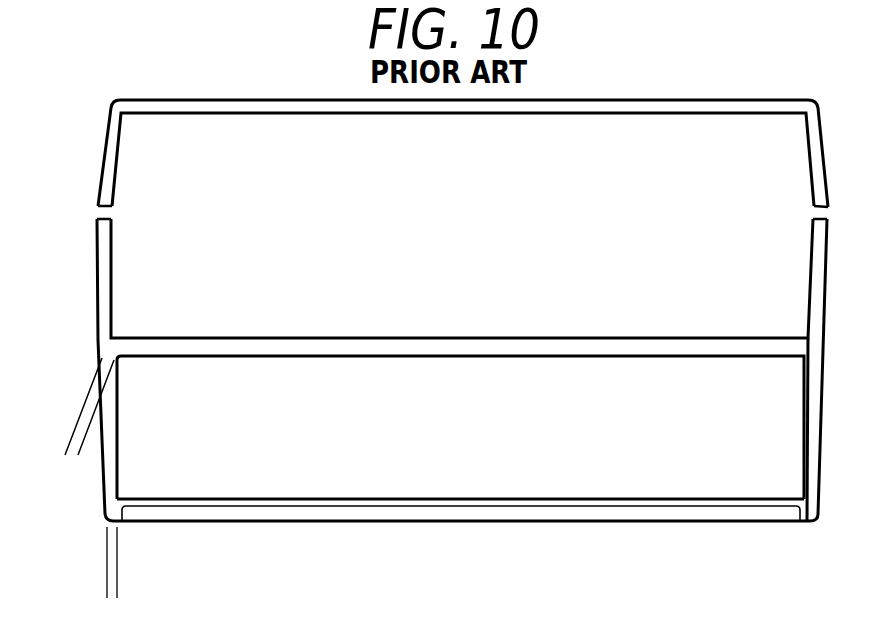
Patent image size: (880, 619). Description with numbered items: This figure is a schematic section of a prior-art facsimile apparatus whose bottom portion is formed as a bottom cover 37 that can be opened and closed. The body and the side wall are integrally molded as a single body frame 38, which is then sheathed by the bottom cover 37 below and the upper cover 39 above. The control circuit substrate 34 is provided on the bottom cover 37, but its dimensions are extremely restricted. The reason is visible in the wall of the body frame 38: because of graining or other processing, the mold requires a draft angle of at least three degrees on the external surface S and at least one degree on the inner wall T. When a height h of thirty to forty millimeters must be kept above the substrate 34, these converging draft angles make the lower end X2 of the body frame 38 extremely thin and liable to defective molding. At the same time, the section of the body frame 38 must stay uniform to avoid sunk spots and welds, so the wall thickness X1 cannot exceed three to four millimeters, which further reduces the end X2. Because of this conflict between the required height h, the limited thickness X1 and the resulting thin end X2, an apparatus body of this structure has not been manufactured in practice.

The upper cover 39 is at (750, 104).
The external surface S is at (97, 298).
The body frame 38 is at (722, 346).
The bottom cover 37 is at (598, 527).
The control circuit substrate 34 is at (675, 505).
The inner wall T is at (121, 433).
The height above the substrate h is at (381, 358).
The thickness of the body frame X1 is at (64, 446).
The end of the body frame X2 is at (106, 587).